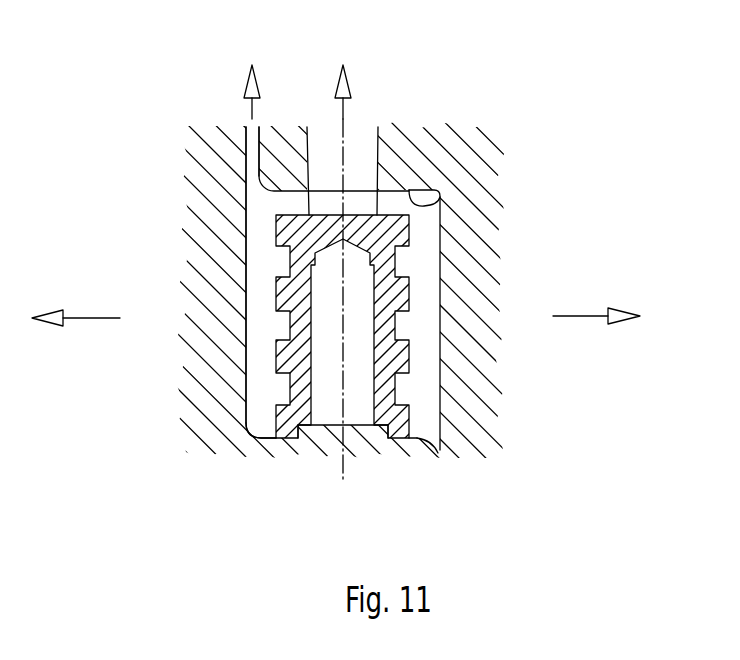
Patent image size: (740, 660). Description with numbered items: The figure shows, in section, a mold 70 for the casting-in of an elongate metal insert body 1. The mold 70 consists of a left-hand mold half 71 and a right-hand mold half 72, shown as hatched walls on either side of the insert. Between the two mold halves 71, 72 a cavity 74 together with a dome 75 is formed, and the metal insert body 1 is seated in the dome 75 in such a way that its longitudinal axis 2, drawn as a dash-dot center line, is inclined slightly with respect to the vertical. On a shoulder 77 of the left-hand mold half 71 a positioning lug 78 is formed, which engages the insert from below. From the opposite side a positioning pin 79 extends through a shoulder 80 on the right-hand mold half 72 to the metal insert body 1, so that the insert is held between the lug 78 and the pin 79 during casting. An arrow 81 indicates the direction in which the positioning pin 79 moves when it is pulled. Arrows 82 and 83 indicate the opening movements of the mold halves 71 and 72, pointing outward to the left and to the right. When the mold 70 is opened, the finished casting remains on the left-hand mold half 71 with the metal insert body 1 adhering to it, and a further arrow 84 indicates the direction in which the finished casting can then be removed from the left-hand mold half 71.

The metal insert body 1 is at (290, 296).
The longitudinal axis 2 is at (343, 467).
The mold 70 is at (552, 135).
The left-hand mold half 71 is at (207, 400).
The right-hand mold half 72 is at (488, 263).
The cavity 74 is at (438, 453).
The dome 75 is at (256, 227).
The shoulder 77 is at (269, 438).
The positioning lug 78 is at (318, 445).
The positioning pin 79 is at (369, 177).
The shoulder 80 is at (409, 190).
The arrow 81 is at (343, 119).
The arrow 82 is at (104, 318).
The arrow 83 is at (582, 316).
The arrow 84 is at (252, 119).